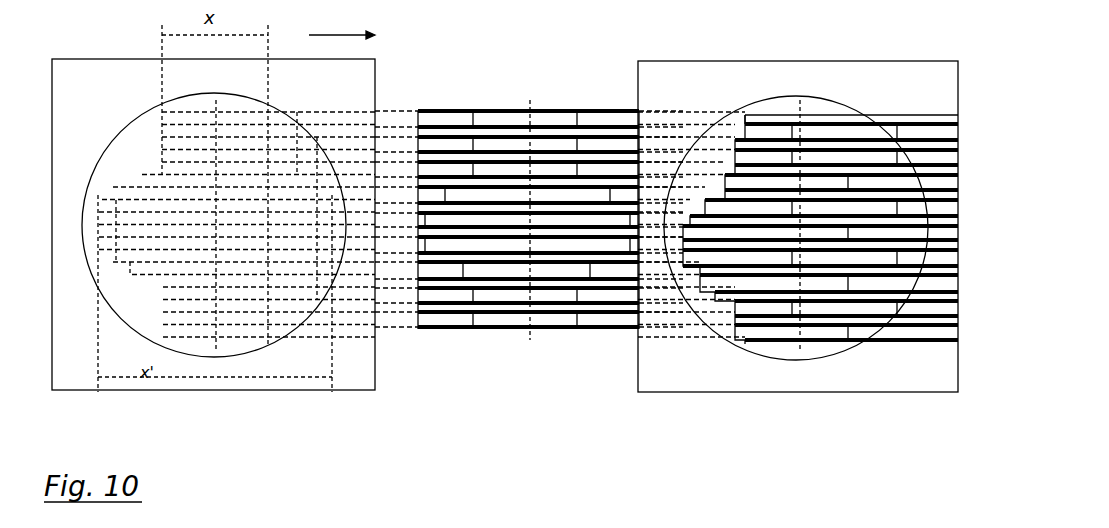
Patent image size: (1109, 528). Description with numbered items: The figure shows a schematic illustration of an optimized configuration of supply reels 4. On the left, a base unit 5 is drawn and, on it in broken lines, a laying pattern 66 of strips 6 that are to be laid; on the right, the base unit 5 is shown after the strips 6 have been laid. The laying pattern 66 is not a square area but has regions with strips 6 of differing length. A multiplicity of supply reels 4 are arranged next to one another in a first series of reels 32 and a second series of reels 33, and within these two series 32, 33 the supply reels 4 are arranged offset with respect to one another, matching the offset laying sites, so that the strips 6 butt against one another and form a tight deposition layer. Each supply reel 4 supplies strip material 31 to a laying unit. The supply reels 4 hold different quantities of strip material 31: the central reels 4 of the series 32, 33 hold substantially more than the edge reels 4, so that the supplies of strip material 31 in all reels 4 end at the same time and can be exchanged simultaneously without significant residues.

The supply reel 4 is at (453, 106).
The base unit 5 is at (353, 372).
The strip 6 is at (700, 248).
The strip material 31 is at (558, 147).
The first series of reels 32 is at (515, 367).
The second series of reels 33 is at (814, 422).
The laying pattern 66 is at (152, 291).